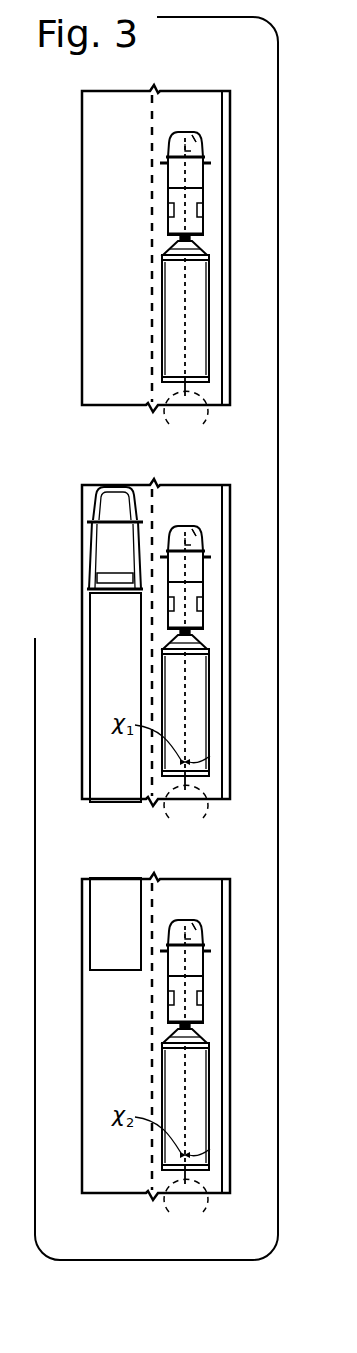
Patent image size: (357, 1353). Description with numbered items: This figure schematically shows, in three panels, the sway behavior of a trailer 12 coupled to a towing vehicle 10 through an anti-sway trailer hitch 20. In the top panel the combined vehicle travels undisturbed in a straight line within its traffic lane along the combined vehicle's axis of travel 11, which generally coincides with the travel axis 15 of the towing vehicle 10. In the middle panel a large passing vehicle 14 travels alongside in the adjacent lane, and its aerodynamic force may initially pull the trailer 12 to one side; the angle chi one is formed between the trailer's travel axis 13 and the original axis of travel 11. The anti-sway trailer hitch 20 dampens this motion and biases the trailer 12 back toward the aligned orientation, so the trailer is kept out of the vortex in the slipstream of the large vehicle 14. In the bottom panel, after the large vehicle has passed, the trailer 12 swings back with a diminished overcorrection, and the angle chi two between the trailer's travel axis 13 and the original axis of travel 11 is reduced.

The towing vehicle 10 is at (168, 180).
The axis of travel 11 is at (203, 807).
The trailer 12 is at (175, 318).
The trailer's travel axis 13 is at (183, 812).
The large passing vehicle 14 is at (115, 698).
The travel axis of the vehicle 15 is at (190, 516).
The anti-sway trailer hitch 20 is at (178, 242).